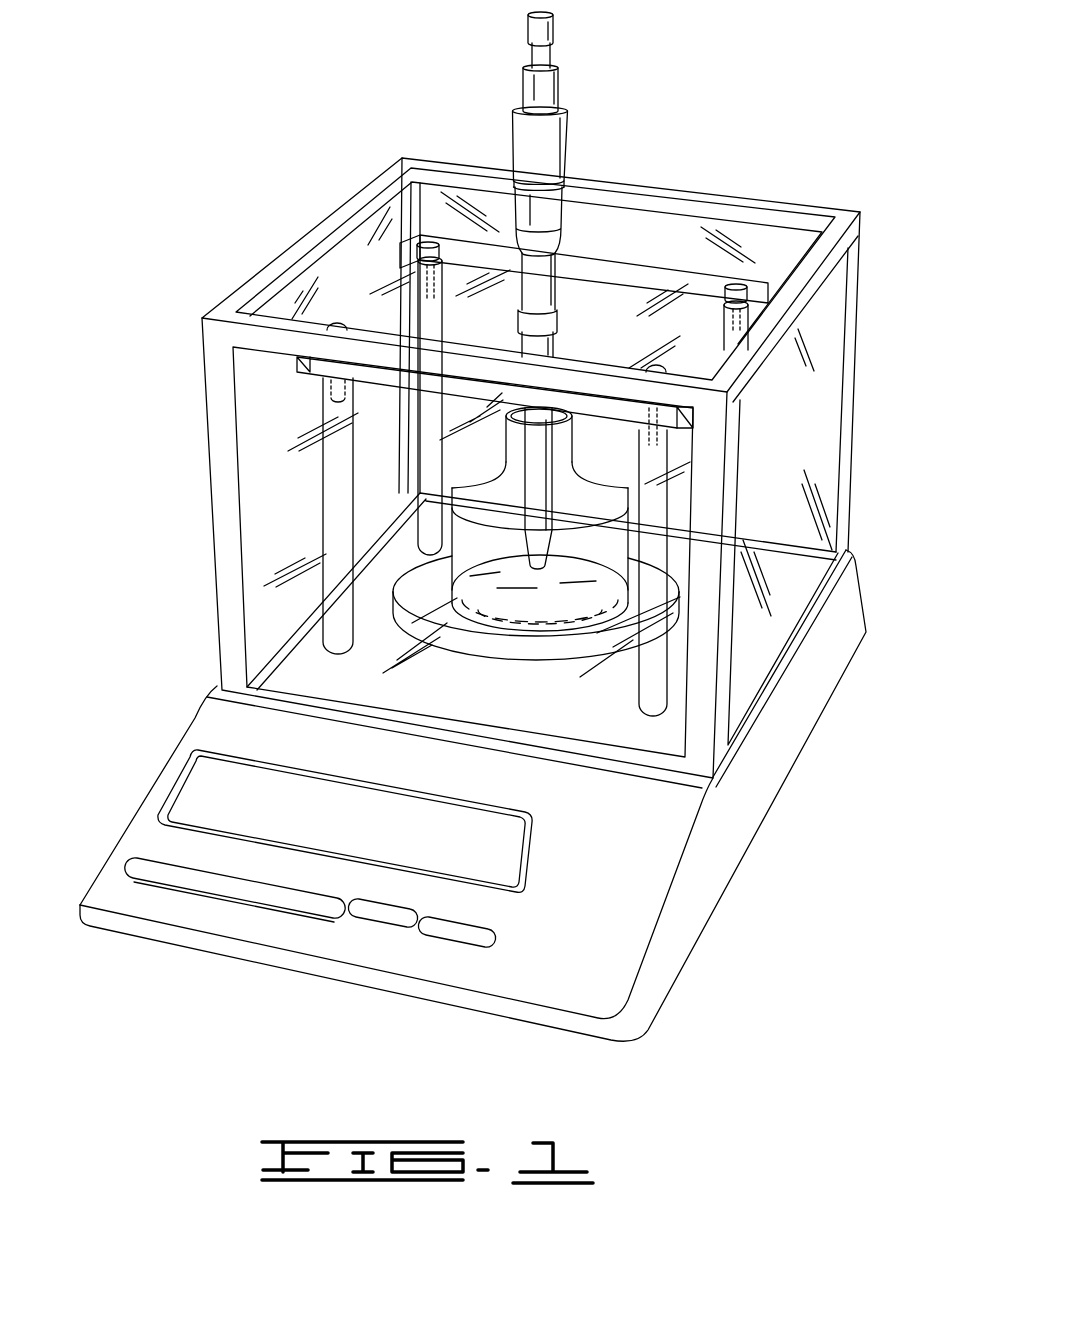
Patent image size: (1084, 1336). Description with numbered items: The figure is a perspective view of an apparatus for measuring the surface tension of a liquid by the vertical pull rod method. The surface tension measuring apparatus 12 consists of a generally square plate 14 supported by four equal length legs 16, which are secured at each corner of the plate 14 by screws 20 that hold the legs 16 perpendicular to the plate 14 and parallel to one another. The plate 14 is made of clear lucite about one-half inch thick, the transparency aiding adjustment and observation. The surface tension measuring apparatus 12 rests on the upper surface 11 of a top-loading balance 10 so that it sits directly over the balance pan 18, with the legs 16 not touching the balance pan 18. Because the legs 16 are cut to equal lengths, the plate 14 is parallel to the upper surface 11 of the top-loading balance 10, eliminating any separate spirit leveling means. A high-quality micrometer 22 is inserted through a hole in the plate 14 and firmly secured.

The top-loading balance 10 is at (812, 855).
The upper surface 11 is at (788, 594).
The surface tension measuring apparatus 12 is at (624, 218).
The plate 14 is at (698, 357).
The legs 16 is at (426, 444).
The balance pan 18 is at (492, 652).
The screws 20 is at (426, 245).
The micrometer 22 is at (510, 125).